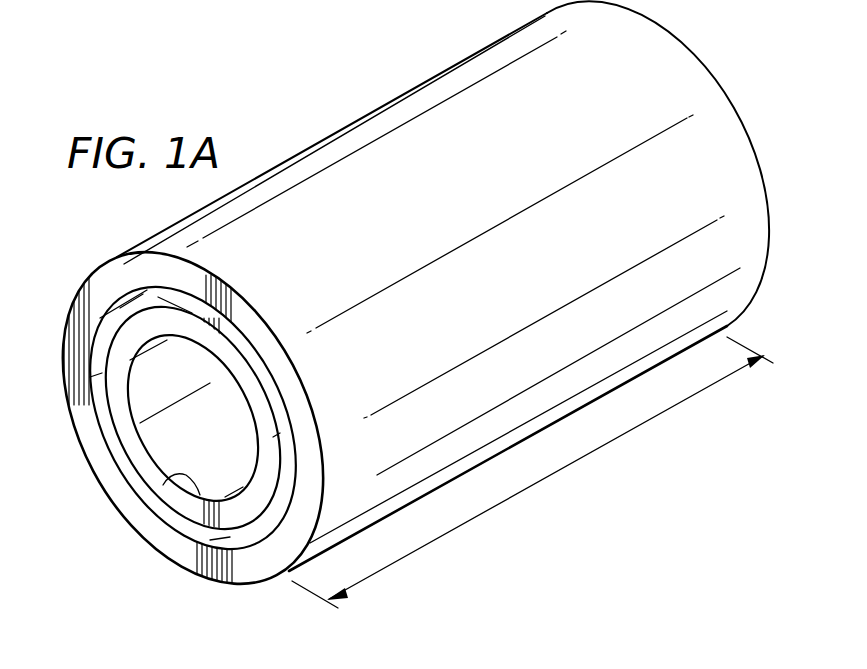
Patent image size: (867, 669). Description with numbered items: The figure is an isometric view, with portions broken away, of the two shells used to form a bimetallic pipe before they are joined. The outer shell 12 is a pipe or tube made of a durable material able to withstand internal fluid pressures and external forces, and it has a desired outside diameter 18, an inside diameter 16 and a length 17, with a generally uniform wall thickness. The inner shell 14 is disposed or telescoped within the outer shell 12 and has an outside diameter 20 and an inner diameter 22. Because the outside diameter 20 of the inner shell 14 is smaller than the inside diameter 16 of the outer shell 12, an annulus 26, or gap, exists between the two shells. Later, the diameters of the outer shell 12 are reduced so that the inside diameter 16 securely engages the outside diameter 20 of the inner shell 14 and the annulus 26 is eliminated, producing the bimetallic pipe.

The outer shell 12 is at (312, 132).
The inner shell 14 is at (106, 392).
The inside diameter 16 is at (283, 416).
The length 17 is at (538, 480).
The outside diameter 18 is at (253, 324).
The outside diameter 20 is at (257, 522).
The inner diameter 22 is at (178, 480).
The annulus 26 is at (127, 465).